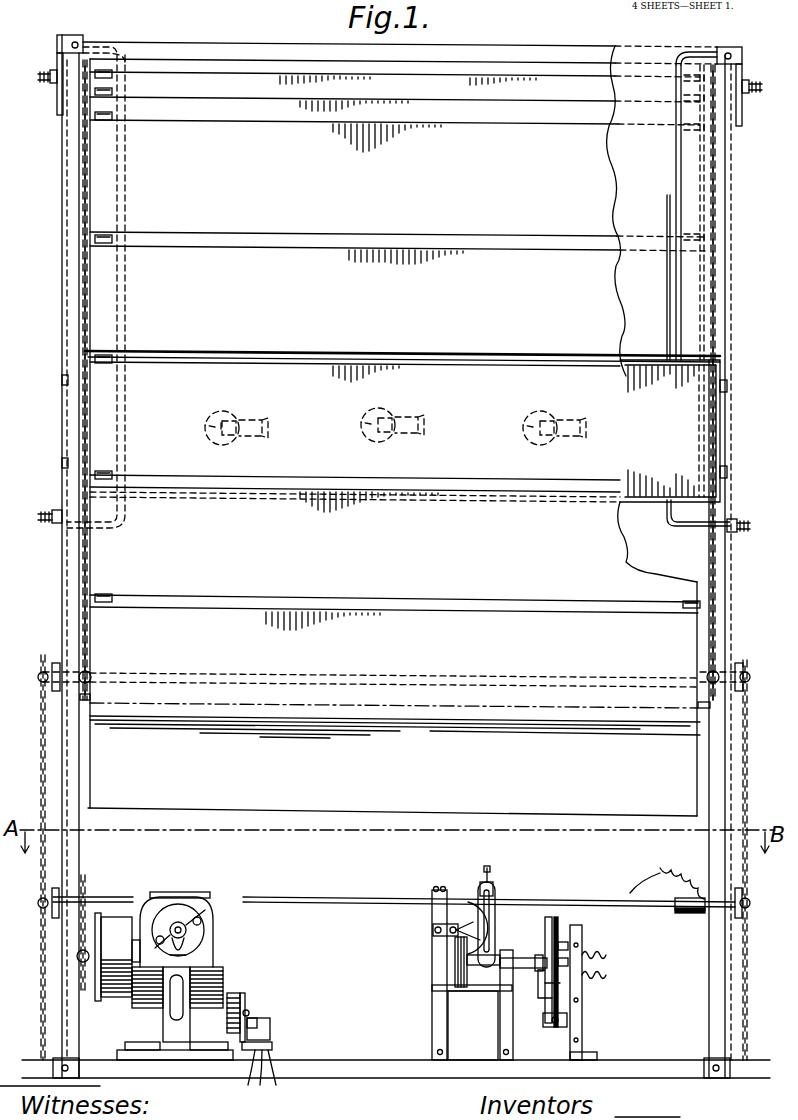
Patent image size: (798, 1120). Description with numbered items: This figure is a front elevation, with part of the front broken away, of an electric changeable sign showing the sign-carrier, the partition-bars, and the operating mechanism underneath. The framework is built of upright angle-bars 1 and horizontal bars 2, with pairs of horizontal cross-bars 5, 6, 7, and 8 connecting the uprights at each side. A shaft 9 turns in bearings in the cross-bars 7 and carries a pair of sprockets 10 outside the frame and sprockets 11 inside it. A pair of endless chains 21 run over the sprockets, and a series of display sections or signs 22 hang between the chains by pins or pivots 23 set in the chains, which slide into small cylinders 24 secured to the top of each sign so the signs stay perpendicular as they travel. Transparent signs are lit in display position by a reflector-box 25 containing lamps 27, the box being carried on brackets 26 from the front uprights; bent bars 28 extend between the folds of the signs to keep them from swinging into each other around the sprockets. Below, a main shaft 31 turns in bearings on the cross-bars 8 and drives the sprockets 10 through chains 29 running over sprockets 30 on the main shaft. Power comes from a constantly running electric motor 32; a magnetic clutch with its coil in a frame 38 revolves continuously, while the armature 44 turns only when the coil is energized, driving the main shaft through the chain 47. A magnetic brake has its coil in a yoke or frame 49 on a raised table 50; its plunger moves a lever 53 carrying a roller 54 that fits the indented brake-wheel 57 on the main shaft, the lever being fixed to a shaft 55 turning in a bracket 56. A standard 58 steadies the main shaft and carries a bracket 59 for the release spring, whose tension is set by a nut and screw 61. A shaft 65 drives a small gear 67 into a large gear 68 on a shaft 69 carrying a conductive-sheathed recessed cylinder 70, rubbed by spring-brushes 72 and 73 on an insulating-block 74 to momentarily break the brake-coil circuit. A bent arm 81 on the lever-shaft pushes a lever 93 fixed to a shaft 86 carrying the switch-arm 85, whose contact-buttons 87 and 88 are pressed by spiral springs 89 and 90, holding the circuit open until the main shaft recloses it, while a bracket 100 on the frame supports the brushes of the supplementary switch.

The upright angle-bars 1 is at (62, 1010).
The horizontal bars 2 is at (180, 50).
The horizontal cross-bars 5 is at (60, 118).
The horizontal cross-bars 6 is at (55, 527).
The horizontal cross-bars 7 is at (56, 663).
The horizontal cross-bars 8 is at (56, 918).
The shaft 9 is at (408, 678).
The sprockets 10 is at (40, 674).
The sprockets 11 is at (88, 672).
The endless chains 21 is at (85, 294).
The display sections or signs 22 is at (402, 431).
The pins or pivots 23 is at (85, 125).
The small cylinders 24 is at (103, 240).
The reflector-box 25 is at (667, 430).
The brackets 26 is at (62, 383).
The lamps 27 is at (230, 418).
The bars 28 is at (125, 148).
The chains 29 is at (41, 773).
The sprockets 30 is at (40, 905).
The main shaft 31 is at (311, 897).
The electric motor 32 is at (196, 941).
The frame of the magnet-coil 38 is at (118, 950).
The iron disk or armature 44 is at (98, 955).
The chain 47 is at (82, 937).
The yoke or frame 49 is at (462, 958).
The table or base 50 is at (450, 990).
The lever 53 is at (487, 938).
The roller 54 is at (490, 922).
The shaft 55 is at (520, 958).
The bracket 56 is at (503, 985).
The indented brake-wheel 57 is at (487, 880).
The standard or support 58 is at (432, 950).
The bracket 59 is at (436, 930).
The threaded nut and screw 61 is at (452, 930).
The shaft 65 is at (235, 993).
The small gear 67 is at (248, 1011).
The large gear 68 is at (254, 1020).
The cylinder 70 is at (270, 1027).
The spring-brush 72 is at (257, 1082).
The spring-brush 73 is at (286, 1081).
The insulating-block 74 is at (272, 1048).
The shaft 69 is at (248, 1085).
The bent arm 81 is at (547, 1000).
The switch-arm 85 is at (570, 1000).
The shaft 86 is at (555, 1027).
The contact-button 87 is at (568, 946).
The contact-button 88 is at (586, 955).
The spiral spring 89 is at (560, 942).
The spiral spring 90 is at (595, 973).
The lever 93 is at (560, 985).
The bracket 100 is at (680, 913).